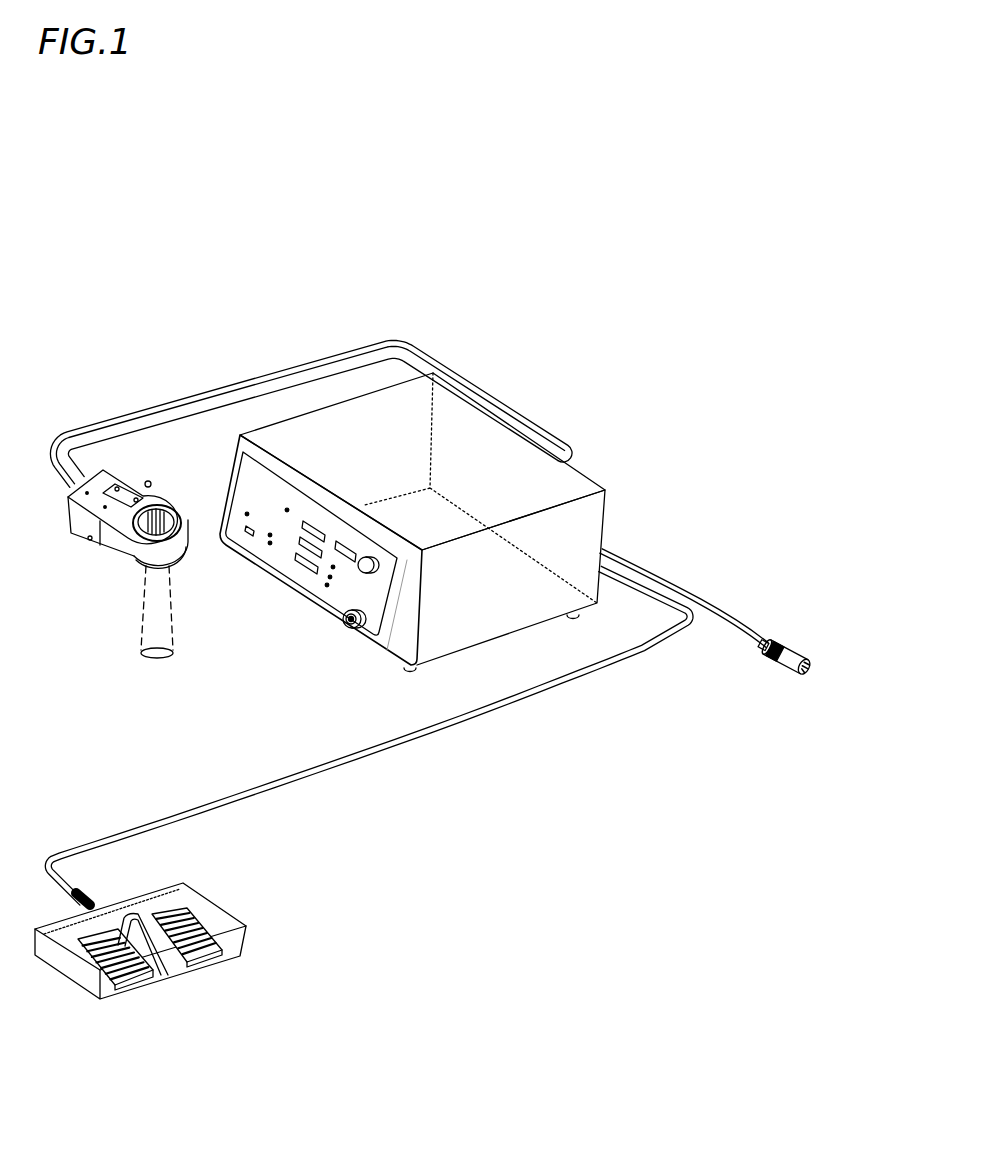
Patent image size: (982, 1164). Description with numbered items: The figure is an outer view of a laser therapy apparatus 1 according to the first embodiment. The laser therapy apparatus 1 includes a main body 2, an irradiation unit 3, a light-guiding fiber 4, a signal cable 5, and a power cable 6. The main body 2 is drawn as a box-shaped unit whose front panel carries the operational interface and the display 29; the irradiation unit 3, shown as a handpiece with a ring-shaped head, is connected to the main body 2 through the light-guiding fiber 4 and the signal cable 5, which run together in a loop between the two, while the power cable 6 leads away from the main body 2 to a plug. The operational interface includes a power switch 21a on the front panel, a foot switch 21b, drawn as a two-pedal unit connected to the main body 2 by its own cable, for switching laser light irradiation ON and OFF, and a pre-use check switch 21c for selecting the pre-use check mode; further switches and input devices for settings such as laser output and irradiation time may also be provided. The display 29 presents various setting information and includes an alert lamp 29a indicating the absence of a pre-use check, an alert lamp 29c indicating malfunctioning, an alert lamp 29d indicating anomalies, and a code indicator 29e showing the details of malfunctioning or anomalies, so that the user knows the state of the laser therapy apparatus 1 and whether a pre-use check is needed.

The laser therapy apparatus 1 is at (536, 354).
The main body 2 is at (572, 480).
The irradiation unit 3 is at (80, 533).
The light-guiding fiber 4 is at (187, 414).
The signal cable 5 is at (406, 343).
The power cable 6 is at (743, 620).
The power switch 21a is at (347, 624).
The foot switch 21b is at (213, 918).
The pre-use check switch 21c is at (245, 531).
The display 29 is at (292, 560).
The alert lamp 29a is at (243, 507).
The alert lamp 29c is at (338, 578).
The alert lamp 29d is at (327, 586).
The code indicator 29e is at (350, 540).